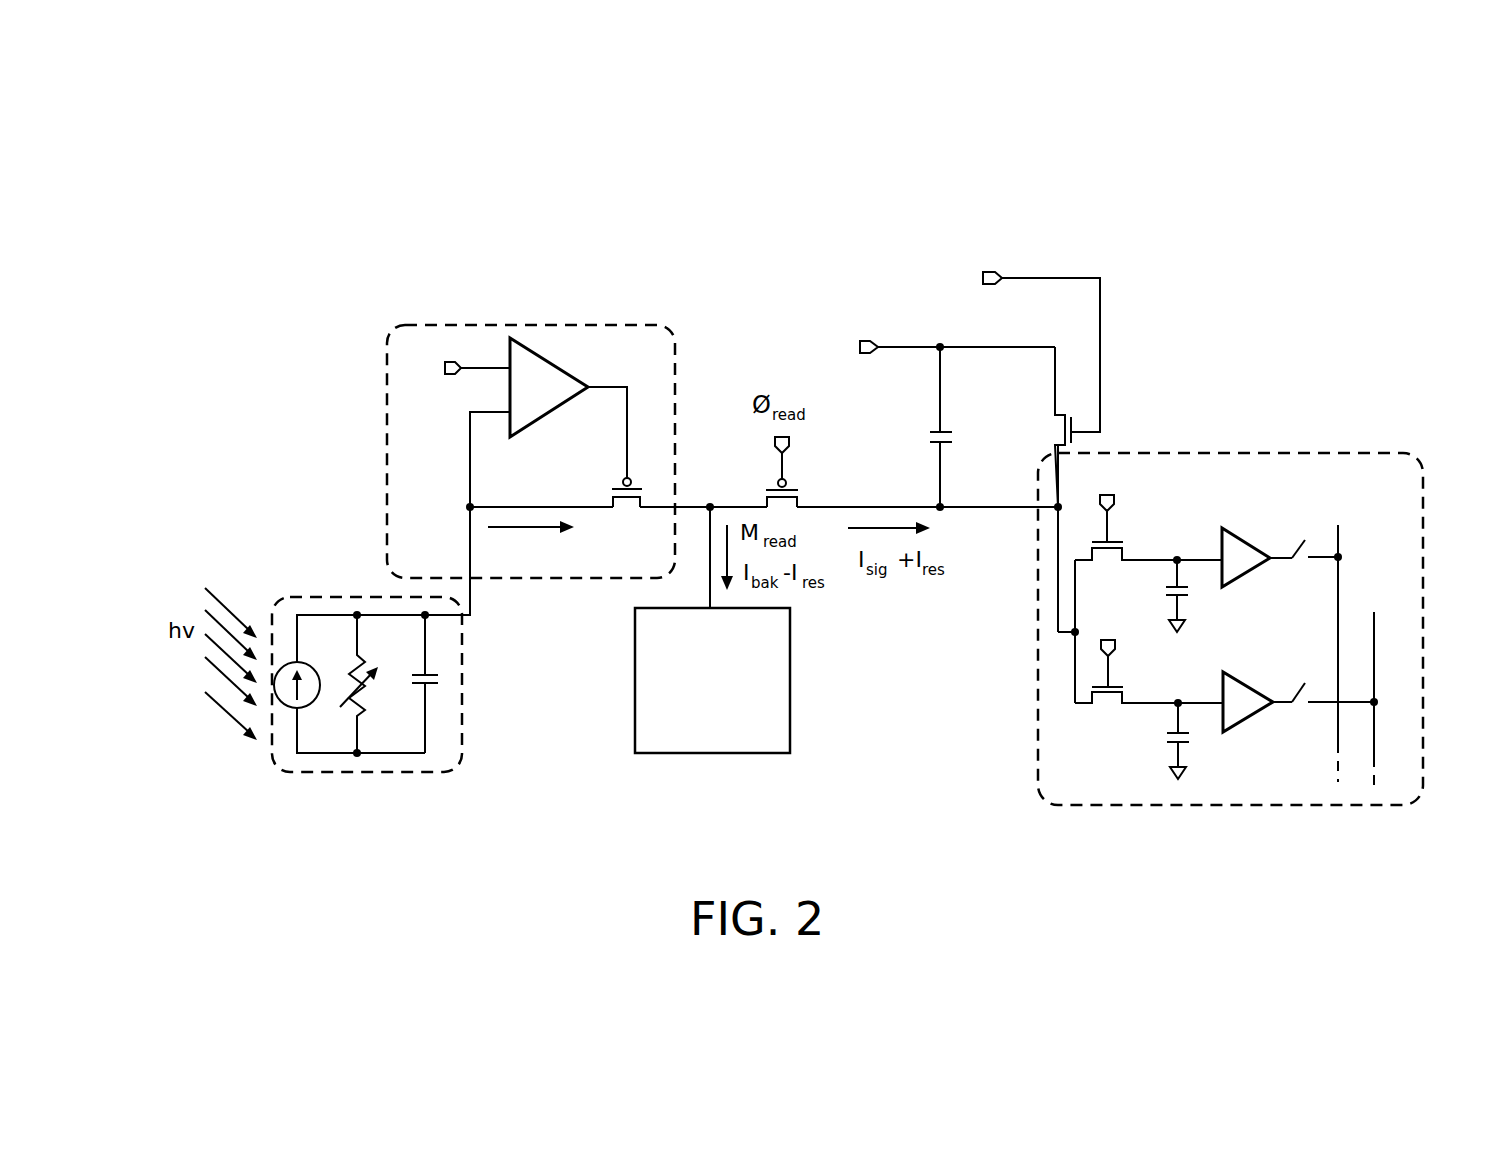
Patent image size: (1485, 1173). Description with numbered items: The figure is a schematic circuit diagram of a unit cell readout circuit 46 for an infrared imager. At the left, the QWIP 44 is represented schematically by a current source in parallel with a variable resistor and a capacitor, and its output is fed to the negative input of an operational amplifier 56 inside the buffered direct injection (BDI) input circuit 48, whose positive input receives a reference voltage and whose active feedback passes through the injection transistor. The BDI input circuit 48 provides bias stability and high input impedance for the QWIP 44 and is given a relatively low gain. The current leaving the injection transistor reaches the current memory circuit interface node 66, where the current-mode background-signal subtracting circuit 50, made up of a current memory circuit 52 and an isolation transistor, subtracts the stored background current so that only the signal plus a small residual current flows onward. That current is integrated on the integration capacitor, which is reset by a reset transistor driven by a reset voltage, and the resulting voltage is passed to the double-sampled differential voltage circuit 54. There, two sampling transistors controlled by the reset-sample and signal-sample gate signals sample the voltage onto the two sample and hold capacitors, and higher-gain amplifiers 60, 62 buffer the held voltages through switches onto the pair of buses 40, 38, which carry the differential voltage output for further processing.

The bus 38 is at (1374, 665).
The bus 40 is at (1338, 538).
The QWIP 44 is at (423, 773).
The unit cell readout circuit 46 is at (587, 243).
The buffered direct injection (BDI) input circuit 48 is at (531, 430).
The current-mode background-signal subtracting circuit 50 is at (858, 643).
The current memory circuit 52 is at (732, 753).
The double-sampled differential voltage circuit 54 is at (1257, 647).
The operational amplifier 56 is at (565, 367).
The amplifier 60 is at (1235, 530).
The amplifier 62 is at (1238, 672).
The current memory circuit interface node 66 is at (707, 487).